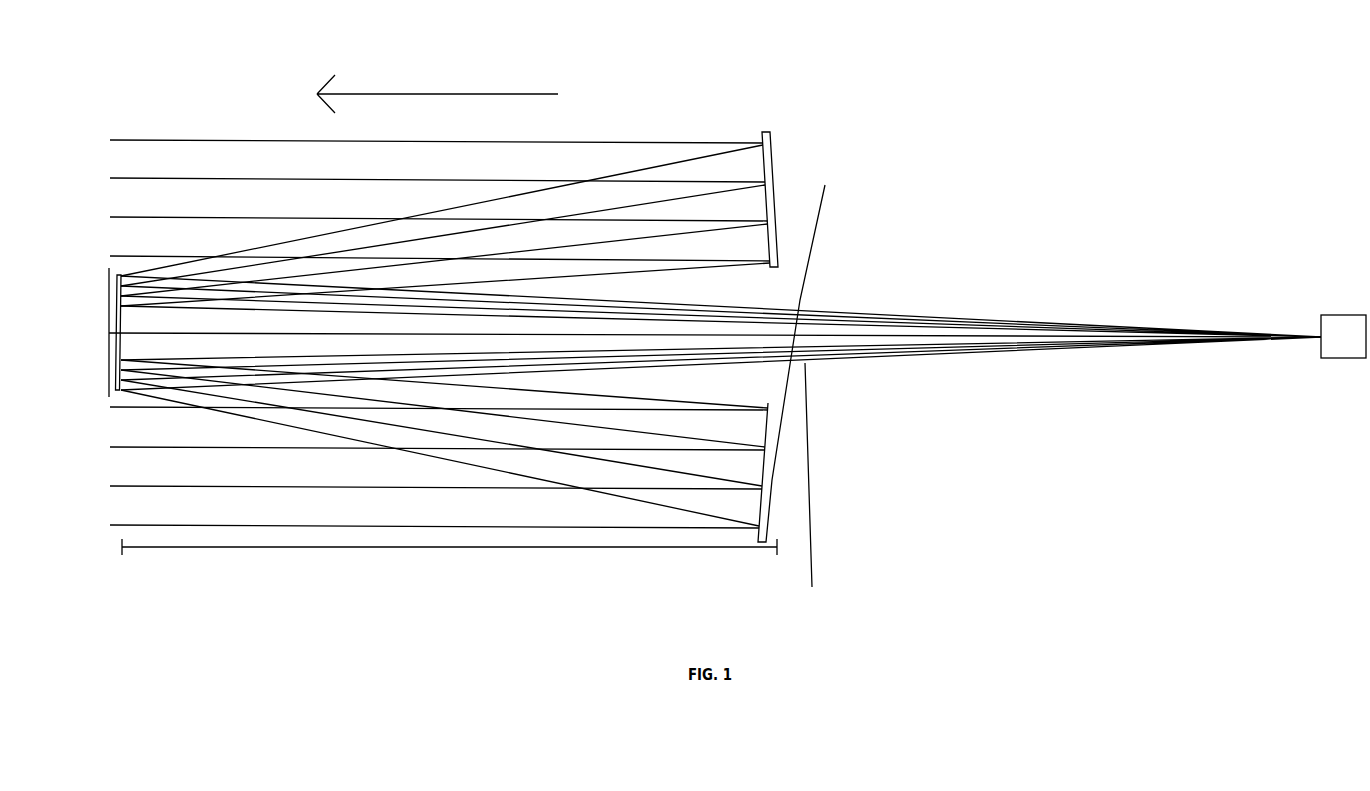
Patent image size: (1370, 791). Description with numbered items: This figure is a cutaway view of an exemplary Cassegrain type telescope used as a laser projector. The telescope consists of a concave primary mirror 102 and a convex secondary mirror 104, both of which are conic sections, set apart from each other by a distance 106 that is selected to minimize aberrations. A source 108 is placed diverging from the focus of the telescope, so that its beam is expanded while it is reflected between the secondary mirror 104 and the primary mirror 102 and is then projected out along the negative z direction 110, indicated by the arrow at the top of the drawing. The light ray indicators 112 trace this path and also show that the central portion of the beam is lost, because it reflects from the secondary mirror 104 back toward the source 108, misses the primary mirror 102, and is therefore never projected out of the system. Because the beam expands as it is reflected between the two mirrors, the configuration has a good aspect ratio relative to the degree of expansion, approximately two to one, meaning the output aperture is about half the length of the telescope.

The primary mirror 102 is at (774, 172).
The secondary mirror 104 is at (117, 283).
The distance 106 is at (373, 546).
The source 108 is at (1333, 314).
The negative z direction 110 is at (522, 93).
The light ray indicators 112 is at (720, 520).